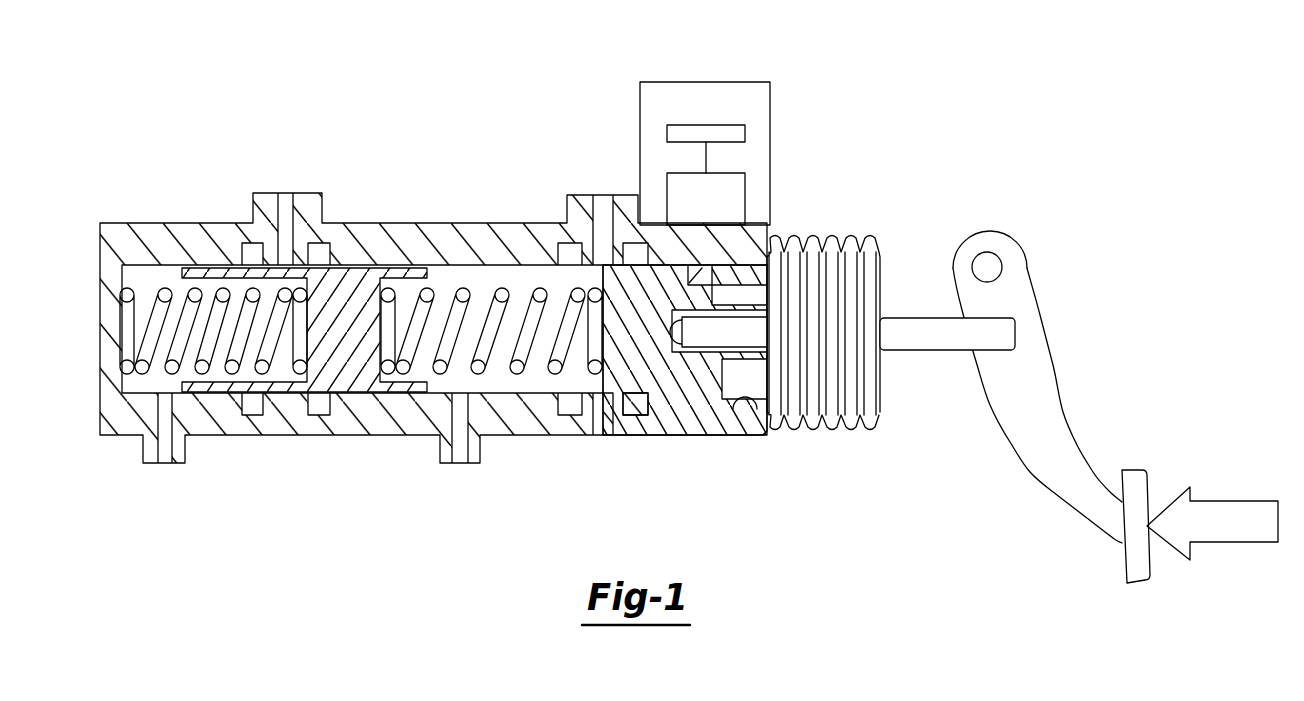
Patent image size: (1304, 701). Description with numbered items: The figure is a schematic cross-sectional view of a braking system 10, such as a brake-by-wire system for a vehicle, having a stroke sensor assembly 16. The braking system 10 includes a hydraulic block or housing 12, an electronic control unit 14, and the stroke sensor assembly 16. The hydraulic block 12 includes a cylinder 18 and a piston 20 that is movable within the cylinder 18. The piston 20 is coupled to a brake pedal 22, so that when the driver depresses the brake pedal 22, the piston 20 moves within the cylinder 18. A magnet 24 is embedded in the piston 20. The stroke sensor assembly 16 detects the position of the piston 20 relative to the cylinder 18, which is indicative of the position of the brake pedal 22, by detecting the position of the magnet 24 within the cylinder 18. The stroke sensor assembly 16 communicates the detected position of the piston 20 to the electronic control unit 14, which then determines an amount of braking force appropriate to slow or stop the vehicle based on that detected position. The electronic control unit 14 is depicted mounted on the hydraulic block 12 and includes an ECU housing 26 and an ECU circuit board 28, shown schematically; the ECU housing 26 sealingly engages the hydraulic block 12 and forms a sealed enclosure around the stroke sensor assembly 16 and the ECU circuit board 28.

The braking system 10 is at (513, 82).
The hydraulic block 12 is at (690, 438).
The electronic control unit 14 is at (660, 80).
The stroke sensor assembly 16 is at (748, 189).
The cylinder 18 is at (757, 409).
The piston 20 is at (662, 388).
The brake pedal 22 is at (1127, 470).
The magnet 24 is at (706, 272).
The ECU housing 26 is at (771, 93).
The ECU circuit board 28 is at (718, 124).